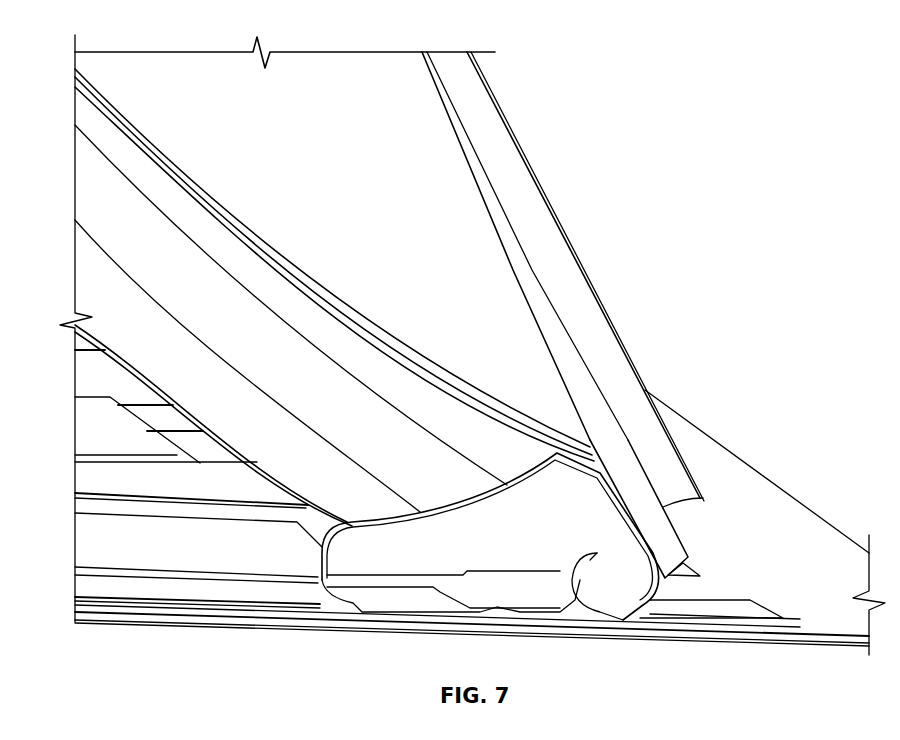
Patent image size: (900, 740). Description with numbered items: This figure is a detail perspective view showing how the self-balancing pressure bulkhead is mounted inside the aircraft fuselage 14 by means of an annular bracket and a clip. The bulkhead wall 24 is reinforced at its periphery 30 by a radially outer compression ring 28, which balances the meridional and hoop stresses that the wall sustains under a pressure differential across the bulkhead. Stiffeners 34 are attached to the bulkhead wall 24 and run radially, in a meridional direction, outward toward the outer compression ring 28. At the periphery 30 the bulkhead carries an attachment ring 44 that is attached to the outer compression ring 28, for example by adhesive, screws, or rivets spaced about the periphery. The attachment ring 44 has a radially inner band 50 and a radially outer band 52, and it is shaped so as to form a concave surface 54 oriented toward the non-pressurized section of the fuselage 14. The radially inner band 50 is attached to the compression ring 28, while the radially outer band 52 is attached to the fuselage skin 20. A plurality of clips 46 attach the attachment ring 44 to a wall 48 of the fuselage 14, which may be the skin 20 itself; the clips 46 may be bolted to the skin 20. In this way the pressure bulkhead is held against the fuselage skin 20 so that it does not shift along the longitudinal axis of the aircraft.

The fuselage 14 is at (325, 635).
The fuselage skin 20 is at (272, 622).
The bulkhead wall 24 is at (368, 68).
The outer compression ring 28 is at (663, 540).
The periphery 30 is at (602, 433).
The stiffeners 34 is at (543, 228).
The attachment ring 44 is at (622, 598).
The clips 46 is at (503, 537).
The wall 48 is at (805, 563).
The radially inner band 50 is at (78, 115).
The radially outer band 52 is at (78, 278).
The concave surface 54 is at (78, 165).